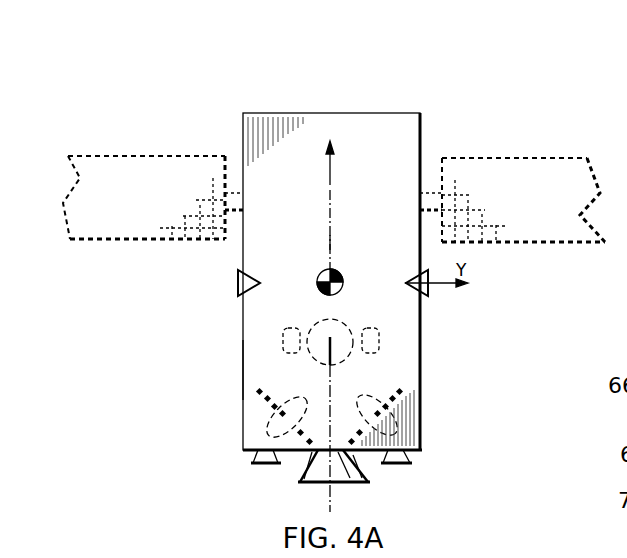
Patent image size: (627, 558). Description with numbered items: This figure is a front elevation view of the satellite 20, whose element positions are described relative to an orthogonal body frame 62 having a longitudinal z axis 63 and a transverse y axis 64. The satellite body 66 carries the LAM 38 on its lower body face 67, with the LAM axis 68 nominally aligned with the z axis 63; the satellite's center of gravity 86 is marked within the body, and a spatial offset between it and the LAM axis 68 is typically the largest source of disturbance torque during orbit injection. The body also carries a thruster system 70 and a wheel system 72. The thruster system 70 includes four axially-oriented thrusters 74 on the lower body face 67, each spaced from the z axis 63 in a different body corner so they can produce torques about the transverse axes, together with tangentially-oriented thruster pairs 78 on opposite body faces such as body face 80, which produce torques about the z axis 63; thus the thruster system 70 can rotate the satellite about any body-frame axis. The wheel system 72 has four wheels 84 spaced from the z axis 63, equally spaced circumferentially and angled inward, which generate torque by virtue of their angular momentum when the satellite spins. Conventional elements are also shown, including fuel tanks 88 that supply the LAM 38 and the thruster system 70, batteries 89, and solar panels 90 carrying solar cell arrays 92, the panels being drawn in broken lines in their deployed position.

The satellite 20 is at (208, 130).
The LAM 38 is at (358, 487).
The orthogonal body frame 62 is at (329, 245).
The z axis 63 is at (333, 173).
The y axis 64 is at (343, 282).
The satellite body 66 is at (232, 369).
The lower body face 67 is at (256, 463).
The LAM axis 68 is at (326, 490).
The thruster system 70 is at (257, 475).
The wheel system 72 is at (248, 401).
The axially-oriented thrusters 74 is at (262, 466).
The tangentially-oriented thruster pair 78 is at (238, 289).
The body face 80 is at (294, 138).
The wheels 84 is at (362, 394).
The center of gravity 86 is at (313, 290).
The fuel tanks 88 is at (376, 338).
The batteries 89 is at (283, 342).
The solar panels 90 is at (536, 158).
The solar cell arrays 92 is at (494, 212).